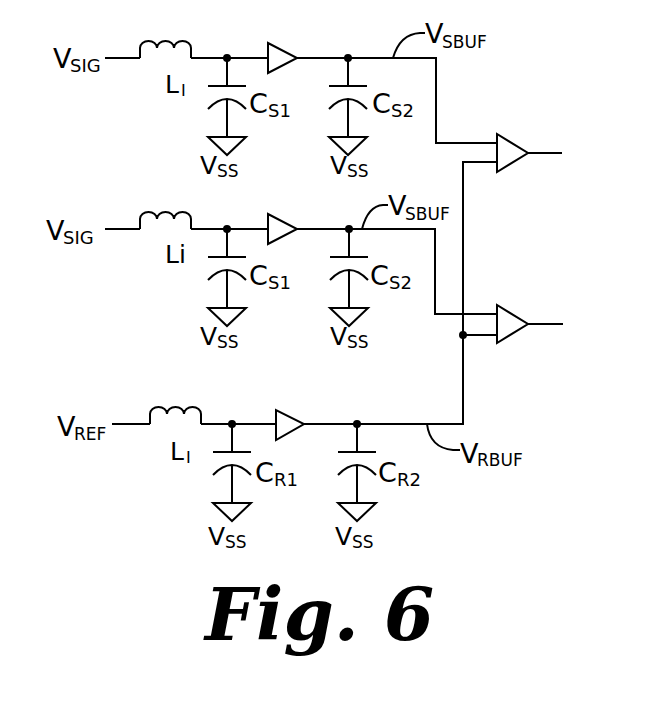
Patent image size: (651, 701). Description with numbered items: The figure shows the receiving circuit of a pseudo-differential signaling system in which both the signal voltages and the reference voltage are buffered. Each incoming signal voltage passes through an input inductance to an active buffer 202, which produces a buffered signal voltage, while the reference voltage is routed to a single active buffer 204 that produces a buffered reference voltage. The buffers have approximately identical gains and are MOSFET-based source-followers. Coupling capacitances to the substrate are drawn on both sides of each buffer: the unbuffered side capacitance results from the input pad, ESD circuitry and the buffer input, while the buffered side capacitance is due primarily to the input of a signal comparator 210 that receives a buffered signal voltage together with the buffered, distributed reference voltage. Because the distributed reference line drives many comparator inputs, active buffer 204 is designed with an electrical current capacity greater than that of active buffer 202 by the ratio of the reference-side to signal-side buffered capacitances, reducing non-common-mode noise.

The active buffer 202 is at (283, 44).
The active buffer 204 is at (290, 412).
The signal comparator 210 is at (508, 136).